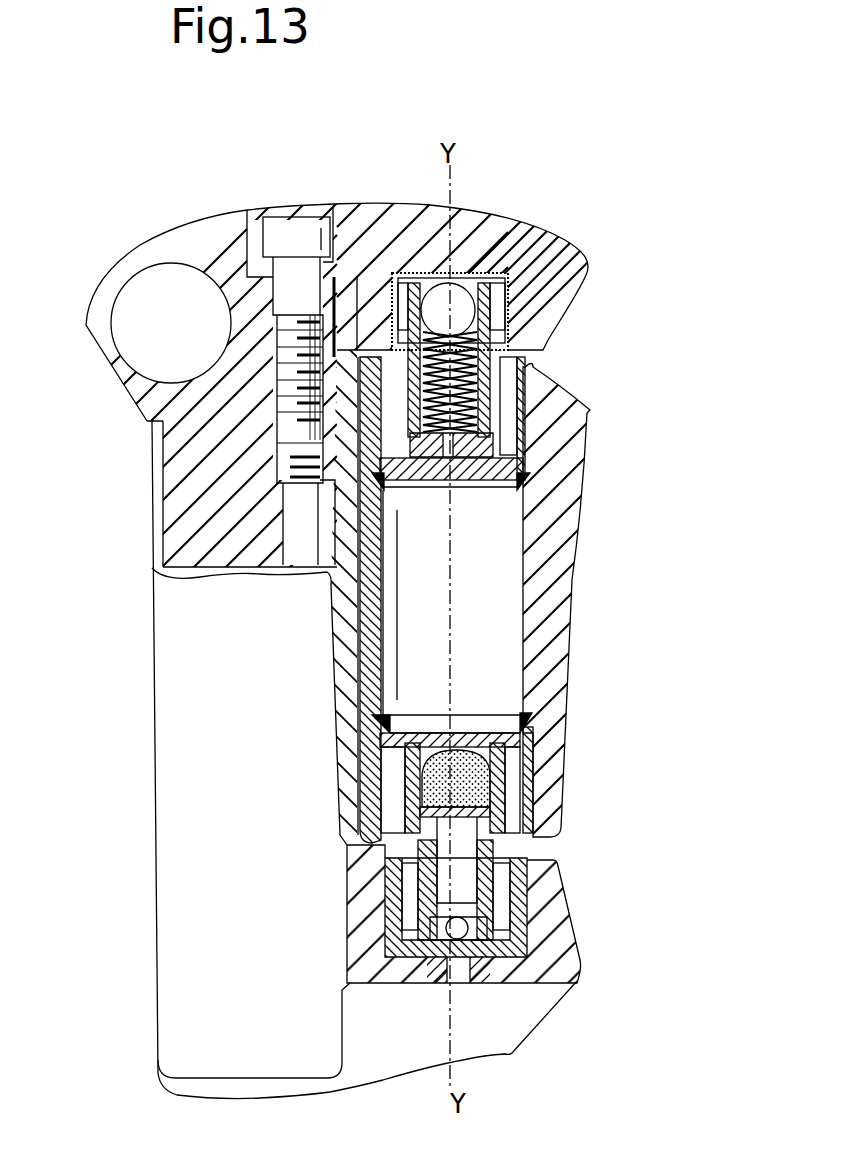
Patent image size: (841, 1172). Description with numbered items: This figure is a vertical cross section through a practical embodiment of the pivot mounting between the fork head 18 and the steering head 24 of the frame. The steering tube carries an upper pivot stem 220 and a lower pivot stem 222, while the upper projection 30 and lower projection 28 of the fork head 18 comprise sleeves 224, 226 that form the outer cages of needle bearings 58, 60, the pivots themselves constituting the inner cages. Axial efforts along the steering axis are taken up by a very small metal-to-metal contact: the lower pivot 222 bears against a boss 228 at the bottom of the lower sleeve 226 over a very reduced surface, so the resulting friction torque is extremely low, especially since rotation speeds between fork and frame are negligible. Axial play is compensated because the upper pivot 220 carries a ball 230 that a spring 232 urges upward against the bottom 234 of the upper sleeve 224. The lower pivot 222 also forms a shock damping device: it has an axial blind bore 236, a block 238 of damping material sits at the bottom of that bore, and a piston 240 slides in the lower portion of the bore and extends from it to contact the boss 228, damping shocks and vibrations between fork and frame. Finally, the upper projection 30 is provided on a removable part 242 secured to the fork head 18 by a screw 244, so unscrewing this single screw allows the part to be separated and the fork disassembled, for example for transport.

The fork head 18 is at (158, 783).
The steering head 24 is at (548, 773).
The lower projection 28 is at (572, 957).
The upper projection 30 is at (583, 271).
The bearing 58 is at (503, 912).
The bearing 60 is at (565, 268).
The upper pivot stem 220 is at (510, 280).
The lower pivot stem 222 is at (504, 983).
The upper sleeve 224 is at (508, 310).
The lower sleeve 226 is at (510, 890).
The boss 228 is at (433, 985).
The ball 230 is at (433, 297).
The spring 232 is at (460, 388).
The bottom of the upper sleeve 234 is at (470, 280).
The axial blind bore 236 is at (360, 846).
The block of damping material 238 is at (462, 760).
The piston 240 is at (445, 922).
The removable part 242 is at (360, 215).
The screw 244 is at (280, 232).